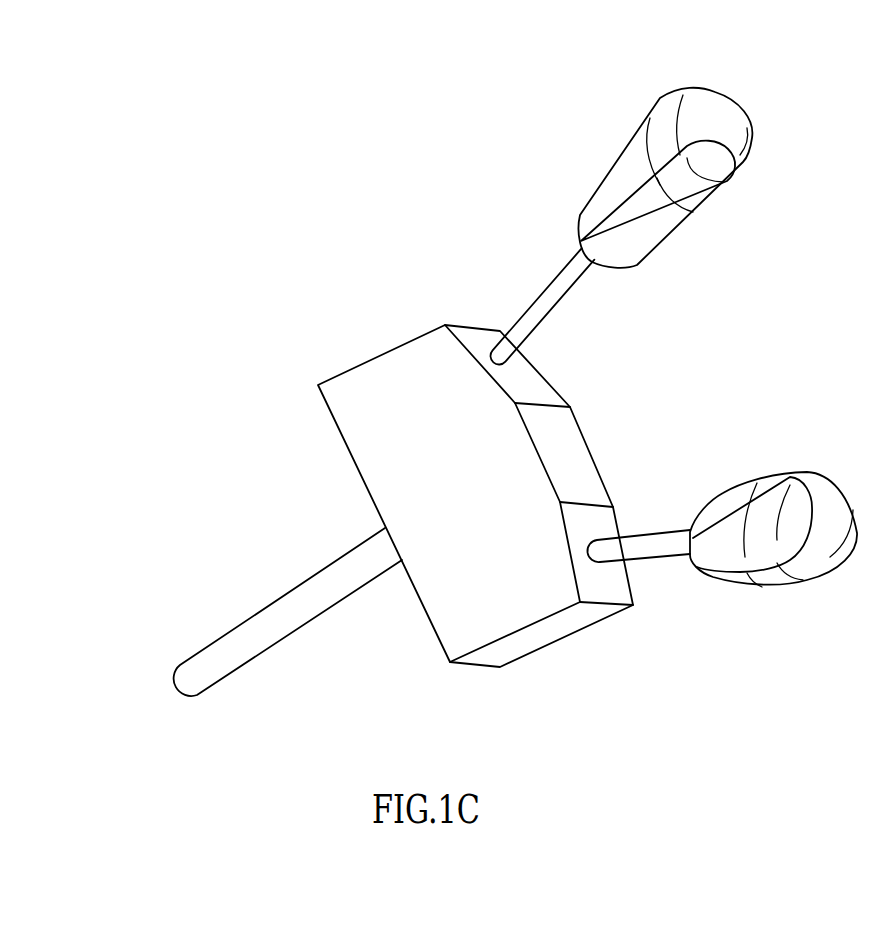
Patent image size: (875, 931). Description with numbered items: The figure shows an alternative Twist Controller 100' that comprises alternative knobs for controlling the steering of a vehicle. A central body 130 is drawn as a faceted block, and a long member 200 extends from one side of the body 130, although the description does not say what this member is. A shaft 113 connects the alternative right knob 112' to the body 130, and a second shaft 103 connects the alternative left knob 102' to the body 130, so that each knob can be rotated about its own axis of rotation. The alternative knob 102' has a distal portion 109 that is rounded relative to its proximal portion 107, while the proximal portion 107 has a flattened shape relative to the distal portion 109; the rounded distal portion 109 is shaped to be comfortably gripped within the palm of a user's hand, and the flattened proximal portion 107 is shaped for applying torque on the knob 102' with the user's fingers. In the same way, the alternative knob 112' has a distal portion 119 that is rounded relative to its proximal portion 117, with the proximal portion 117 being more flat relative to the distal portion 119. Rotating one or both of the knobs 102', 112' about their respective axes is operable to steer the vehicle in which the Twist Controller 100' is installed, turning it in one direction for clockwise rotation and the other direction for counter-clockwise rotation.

The alternative Twist Controller 100' is at (522, 356).
The body 130 is at (390, 352).
The handle 200 is at (253, 615).
The shaft 113 is at (552, 284).
The alternative knob 112' is at (647, 177).
The distal portion 119 is at (697, 88).
The proximal portion 117 is at (657, 248).
The shaft 103 is at (640, 540).
The alternative knob 102' is at (780, 537).
The proximal portion 107 is at (713, 583).
The distal portion 109 is at (813, 580).